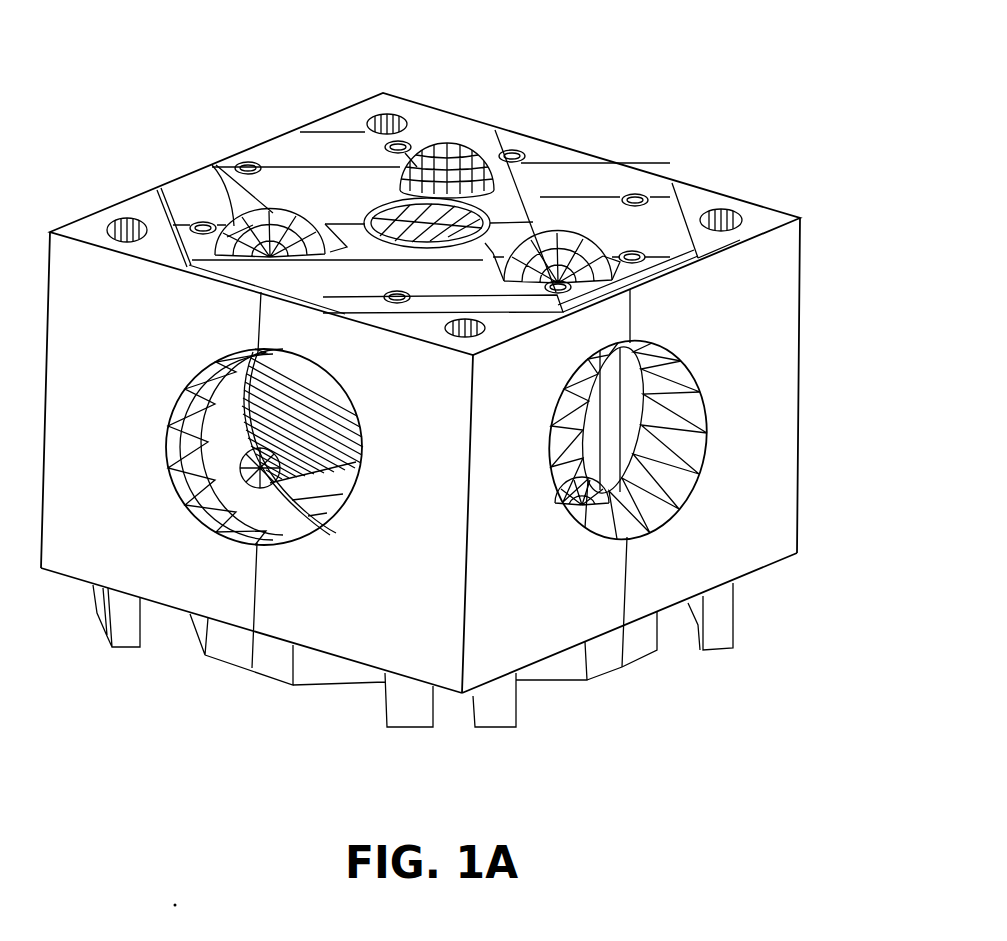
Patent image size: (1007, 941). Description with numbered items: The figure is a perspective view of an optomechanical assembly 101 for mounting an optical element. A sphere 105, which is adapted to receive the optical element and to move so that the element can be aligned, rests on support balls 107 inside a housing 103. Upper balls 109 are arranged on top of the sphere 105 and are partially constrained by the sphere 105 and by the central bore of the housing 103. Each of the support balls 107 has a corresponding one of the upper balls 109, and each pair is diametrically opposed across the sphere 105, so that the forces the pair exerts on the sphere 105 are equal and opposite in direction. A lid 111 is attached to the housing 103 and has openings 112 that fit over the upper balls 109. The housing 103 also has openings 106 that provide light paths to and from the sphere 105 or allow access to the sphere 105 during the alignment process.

The optomechanical assembly 101 is at (692, 125).
The housing 103 is at (797, 540).
The sphere 105 is at (246, 412).
The openings 106 is at (202, 458).
The support balls 107 is at (217, 527).
The upper balls 109 is at (212, 166).
The lid 111 is at (283, 150).
The openings 112 is at (185, 177).